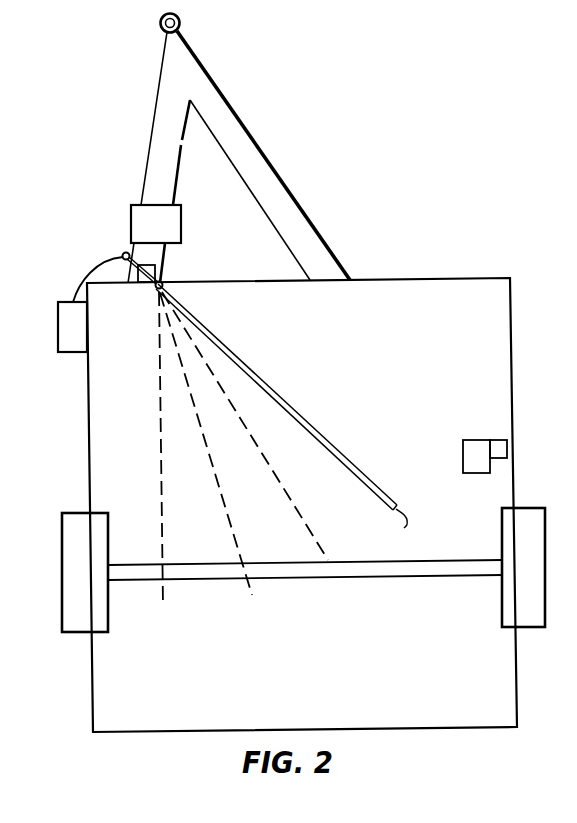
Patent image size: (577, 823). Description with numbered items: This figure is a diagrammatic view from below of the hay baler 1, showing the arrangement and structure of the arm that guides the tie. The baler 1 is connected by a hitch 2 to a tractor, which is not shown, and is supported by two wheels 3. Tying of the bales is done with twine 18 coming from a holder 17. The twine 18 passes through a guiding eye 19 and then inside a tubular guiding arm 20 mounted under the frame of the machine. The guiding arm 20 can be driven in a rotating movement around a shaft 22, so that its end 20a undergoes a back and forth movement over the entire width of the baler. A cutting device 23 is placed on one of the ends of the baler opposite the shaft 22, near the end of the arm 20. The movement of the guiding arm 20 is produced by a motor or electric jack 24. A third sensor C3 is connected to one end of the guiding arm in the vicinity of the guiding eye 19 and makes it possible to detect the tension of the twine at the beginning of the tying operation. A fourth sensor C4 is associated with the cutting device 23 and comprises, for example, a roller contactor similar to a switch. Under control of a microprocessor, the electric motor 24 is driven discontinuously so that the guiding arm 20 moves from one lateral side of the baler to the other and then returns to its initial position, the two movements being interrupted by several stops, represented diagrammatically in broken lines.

The hay baler 1 is at (507, 263).
The hitch 2 is at (250, 152).
The wheels 3 is at (70, 597).
The holder 17 is at (72, 343).
The twine 18 is at (93, 270).
The guiding eye 19 is at (123, 254).
The tubular guiding arm 20 is at (318, 433).
The end of guiding arm 20a is at (405, 503).
The shaft 22 is at (157, 290).
The cutting device 23 is at (478, 448).
The electric motor or jack 24 is at (150, 215).
The third sensor C3 is at (155, 270).
The fourth sensor C4 is at (500, 448).